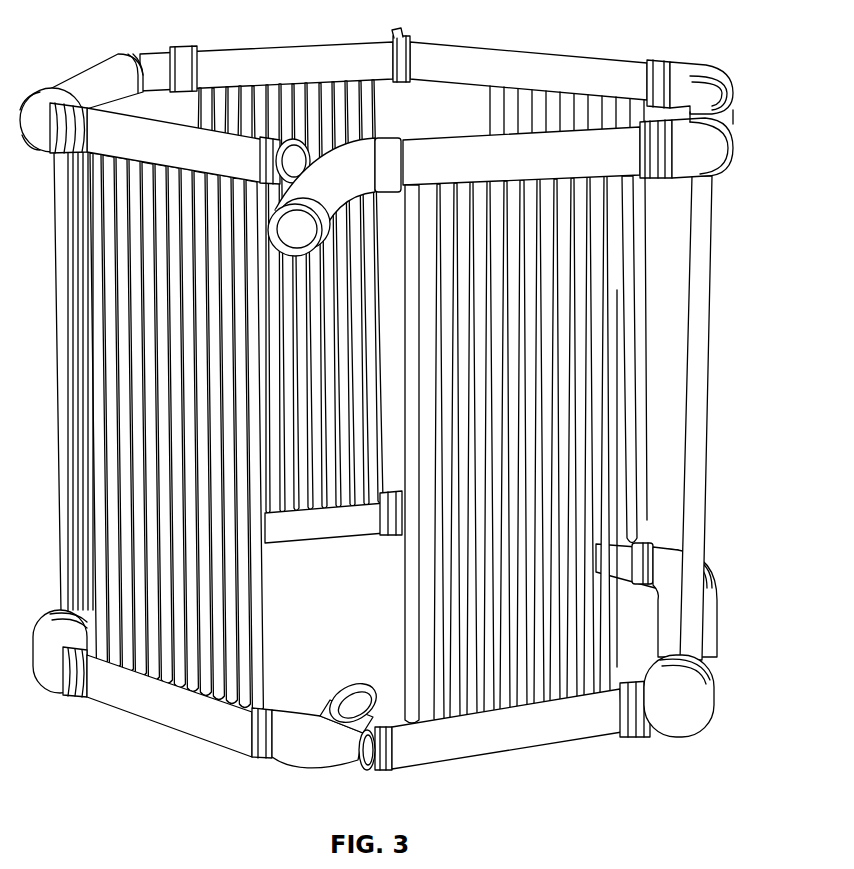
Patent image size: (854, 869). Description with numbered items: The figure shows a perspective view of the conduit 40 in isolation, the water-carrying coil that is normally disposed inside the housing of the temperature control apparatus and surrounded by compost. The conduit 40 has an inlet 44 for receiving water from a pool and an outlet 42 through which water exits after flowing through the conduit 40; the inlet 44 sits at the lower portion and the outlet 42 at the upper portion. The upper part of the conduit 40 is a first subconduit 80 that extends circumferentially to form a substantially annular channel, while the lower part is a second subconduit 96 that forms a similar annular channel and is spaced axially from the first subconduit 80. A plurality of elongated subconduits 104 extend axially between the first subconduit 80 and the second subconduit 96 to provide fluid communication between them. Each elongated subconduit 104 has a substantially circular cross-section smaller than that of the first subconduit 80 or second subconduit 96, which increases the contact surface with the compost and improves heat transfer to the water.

The conduit 40 is at (84, 50).
The outlet 42 is at (292, 232).
The inlet 44 is at (354, 695).
The first subconduit 80 is at (707, 157).
The second subconduit 96 is at (48, 630).
The elongated subconduits 104 is at (107, 442).